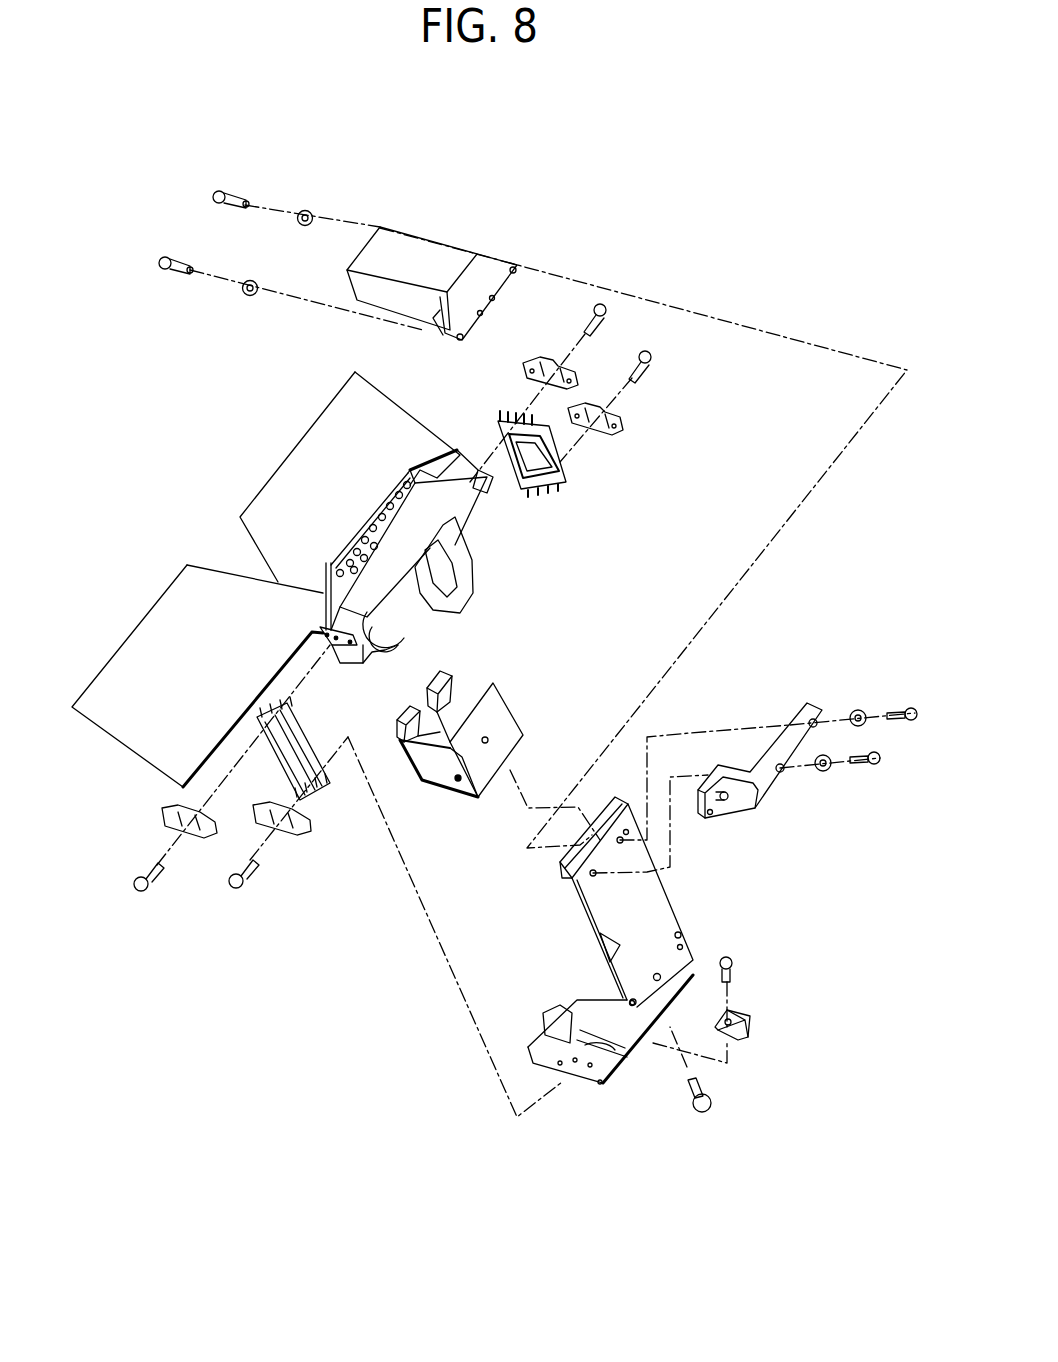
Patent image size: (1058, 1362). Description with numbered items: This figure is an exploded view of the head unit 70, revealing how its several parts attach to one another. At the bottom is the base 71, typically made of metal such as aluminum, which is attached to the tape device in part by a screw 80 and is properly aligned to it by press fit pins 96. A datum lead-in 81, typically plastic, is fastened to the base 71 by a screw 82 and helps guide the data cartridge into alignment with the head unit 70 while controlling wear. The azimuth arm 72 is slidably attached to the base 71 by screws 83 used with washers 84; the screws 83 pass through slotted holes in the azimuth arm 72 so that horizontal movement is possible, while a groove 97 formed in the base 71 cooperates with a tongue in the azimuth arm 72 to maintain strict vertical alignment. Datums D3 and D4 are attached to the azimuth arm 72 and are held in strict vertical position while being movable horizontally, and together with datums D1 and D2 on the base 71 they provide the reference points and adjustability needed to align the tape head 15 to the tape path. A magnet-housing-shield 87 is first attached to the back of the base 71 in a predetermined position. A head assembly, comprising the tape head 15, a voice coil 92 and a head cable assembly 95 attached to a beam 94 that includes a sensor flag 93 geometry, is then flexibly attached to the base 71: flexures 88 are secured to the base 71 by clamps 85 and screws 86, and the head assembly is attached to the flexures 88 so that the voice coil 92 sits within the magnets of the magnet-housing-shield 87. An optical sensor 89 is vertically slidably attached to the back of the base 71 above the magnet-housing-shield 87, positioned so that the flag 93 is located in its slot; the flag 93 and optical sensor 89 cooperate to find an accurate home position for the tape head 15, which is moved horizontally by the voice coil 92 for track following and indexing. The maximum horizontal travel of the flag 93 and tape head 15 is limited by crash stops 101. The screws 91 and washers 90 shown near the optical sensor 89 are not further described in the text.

The head unit 70 is at (740, 175).
The screws 91 is at (220, 190).
The washers 90 is at (302, 210).
The optical sensor 89 is at (437, 242).
The sensor flag 93 is at (432, 470).
The beam 94 is at (323, 567).
The head cable assembly 95 is at (158, 600).
The voice coil 92 is at (475, 578).
The tape head 15 is at (412, 632).
The flexures 88 is at (567, 478).
The crash stops 101 is at (447, 708).
The magnet-housing-shield 87 is at (520, 737).
The clamps 85 is at (180, 818).
The screws 86 is at (135, 878).
The groove 97 is at (567, 873).
The base 71 is at (657, 892).
The press fit pins 96 is at (633, 1003).
The azimuth arm 72 is at (760, 810).
The washers 84 is at (853, 715).
The screws 83 is at (910, 713).
The screw 82 is at (733, 968).
The datum lead-in 81 is at (747, 1033).
The screw 80 is at (705, 1110).
The datum D1 is at (560, 1063).
The datum D2 is at (600, 1082).
The datum D3 is at (710, 815).
The datum D4 is at (730, 802).